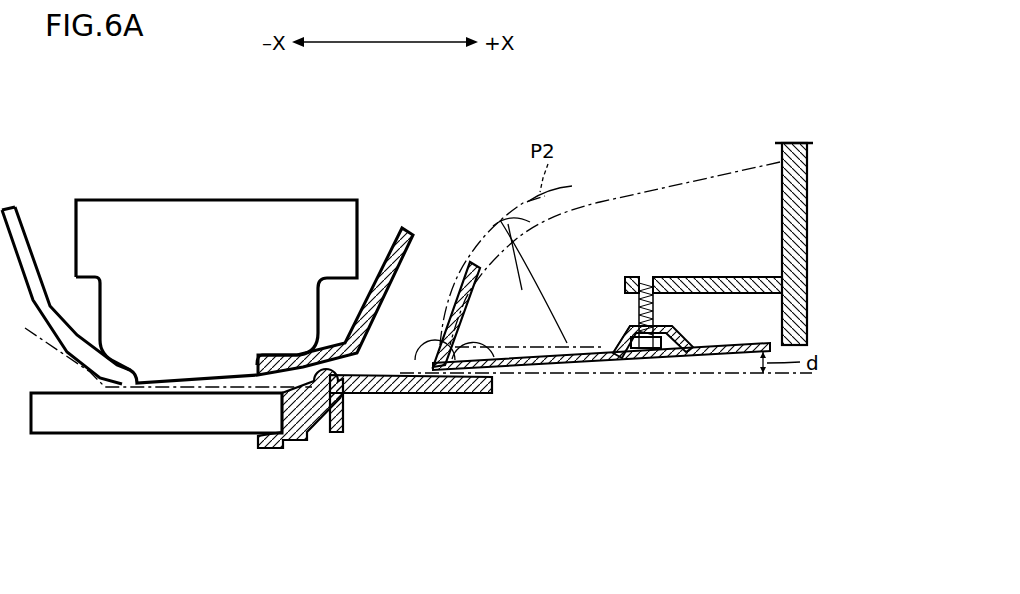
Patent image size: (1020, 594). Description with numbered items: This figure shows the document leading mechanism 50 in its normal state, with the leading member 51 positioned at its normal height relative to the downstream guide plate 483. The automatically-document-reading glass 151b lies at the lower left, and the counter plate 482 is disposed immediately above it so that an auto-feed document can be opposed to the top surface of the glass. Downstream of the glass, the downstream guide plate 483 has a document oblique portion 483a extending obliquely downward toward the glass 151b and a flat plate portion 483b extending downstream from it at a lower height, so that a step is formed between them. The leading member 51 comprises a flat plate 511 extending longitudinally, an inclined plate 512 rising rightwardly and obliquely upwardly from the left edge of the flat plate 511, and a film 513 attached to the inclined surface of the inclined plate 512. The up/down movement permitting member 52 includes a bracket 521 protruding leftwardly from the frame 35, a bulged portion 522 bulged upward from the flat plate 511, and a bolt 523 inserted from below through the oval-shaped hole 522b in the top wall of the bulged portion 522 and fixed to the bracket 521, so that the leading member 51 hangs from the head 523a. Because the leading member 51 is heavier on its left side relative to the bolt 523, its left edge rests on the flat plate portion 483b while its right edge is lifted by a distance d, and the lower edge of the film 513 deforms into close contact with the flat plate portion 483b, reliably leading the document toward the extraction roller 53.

The counter plate 482 is at (350, 322).
The downstream guide plate 483 is at (345, 458).
The document oblique portion 483a is at (318, 405).
The flat plate portion 483b is at (377, 397).
The automatically-document-reading glass 151b is at (152, 420).
The document leading mechanism 50 is at (560, 394).
The leading member 51 is at (550, 385).
The flat plate 511 is at (432, 467).
The inclined plate 512 is at (500, 362).
The film 513 is at (433, 395).
The up/down movement permitting member 52 is at (668, 392).
The bracket 521 is at (715, 283).
The bulged portion 522 is at (618, 357).
The oval-shaped hole 522b is at (621, 318).
The bolt 523 is at (705, 350).
The head 523a is at (660, 377).
The extraction roller 53 is at (510, 240).
The frame 35 is at (790, 140).